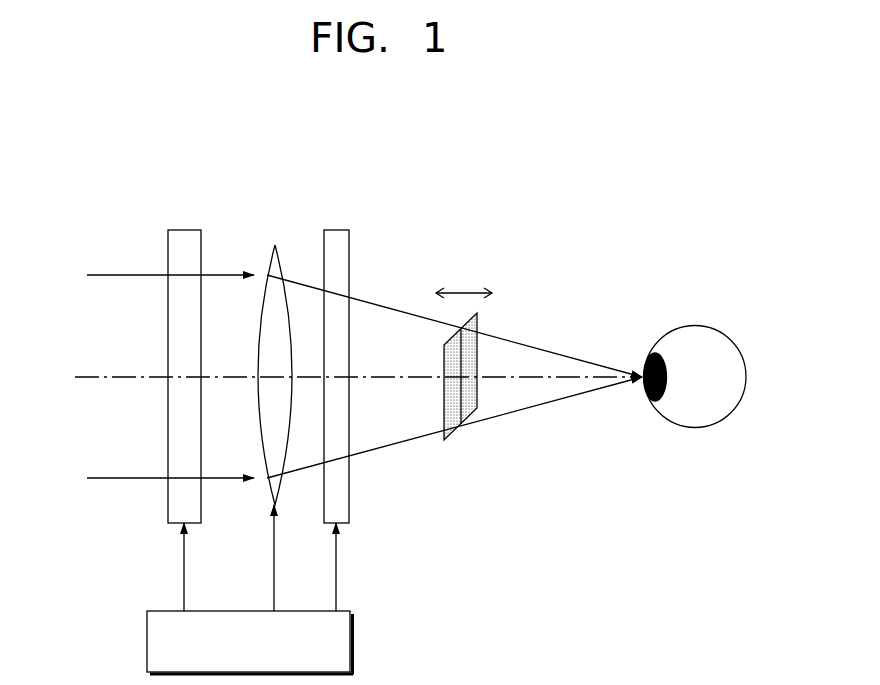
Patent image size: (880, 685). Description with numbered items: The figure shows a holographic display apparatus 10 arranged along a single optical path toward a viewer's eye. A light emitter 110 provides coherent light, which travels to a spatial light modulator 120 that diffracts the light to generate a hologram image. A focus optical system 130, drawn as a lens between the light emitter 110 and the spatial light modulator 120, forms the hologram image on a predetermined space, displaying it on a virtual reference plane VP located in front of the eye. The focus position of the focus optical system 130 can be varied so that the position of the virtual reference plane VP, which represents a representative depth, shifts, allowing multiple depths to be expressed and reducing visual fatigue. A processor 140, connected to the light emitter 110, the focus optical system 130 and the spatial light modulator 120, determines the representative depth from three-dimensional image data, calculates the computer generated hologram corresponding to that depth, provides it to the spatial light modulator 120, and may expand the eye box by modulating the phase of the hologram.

The holographic display apparatus 10 is at (548, 208).
The light emitter 110 is at (187, 230).
The spatial light modulator 120 is at (337, 230).
The focus optical system 130 is at (275, 245).
The processor 140 is at (352, 643).
The virtual reference plane VP is at (452, 441).